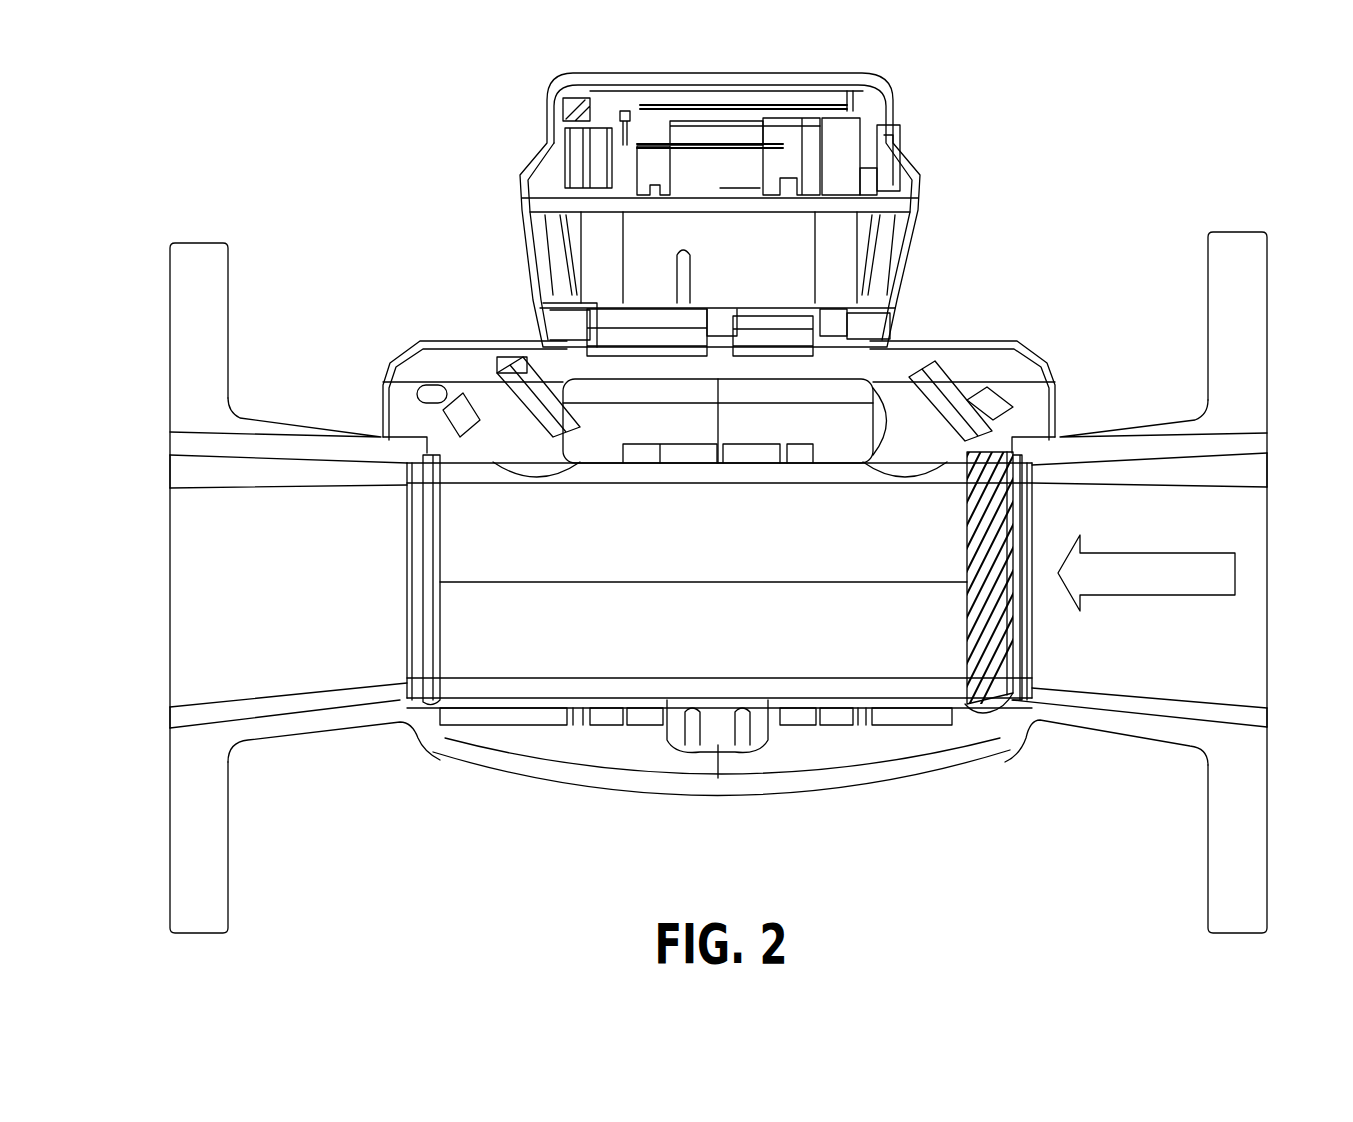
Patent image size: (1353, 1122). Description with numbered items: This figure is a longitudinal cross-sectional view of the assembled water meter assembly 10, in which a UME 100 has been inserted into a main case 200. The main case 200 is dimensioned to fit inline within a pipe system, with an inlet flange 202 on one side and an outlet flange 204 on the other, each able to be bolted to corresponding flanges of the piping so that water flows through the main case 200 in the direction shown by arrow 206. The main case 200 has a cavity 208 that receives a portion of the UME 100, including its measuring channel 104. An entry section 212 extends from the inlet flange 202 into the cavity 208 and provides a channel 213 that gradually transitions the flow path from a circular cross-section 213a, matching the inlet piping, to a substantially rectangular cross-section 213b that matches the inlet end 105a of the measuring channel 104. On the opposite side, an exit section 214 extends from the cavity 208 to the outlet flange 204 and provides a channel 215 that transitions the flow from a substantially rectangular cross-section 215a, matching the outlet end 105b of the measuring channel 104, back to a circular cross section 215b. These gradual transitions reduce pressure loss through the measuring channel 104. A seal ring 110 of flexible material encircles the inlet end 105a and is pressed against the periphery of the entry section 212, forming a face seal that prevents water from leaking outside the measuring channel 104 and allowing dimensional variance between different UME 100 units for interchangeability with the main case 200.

The assembly 10 is at (232, 106).
The UME 100 is at (438, 207).
The main case 200 is at (347, 810).
The outlet flange 204 is at (197, 243).
The inlet flange 202 is at (1228, 232).
The exit section 214 is at (146, 524).
The entry section 212 is at (1292, 519).
The channel 215 is at (250, 622).
The substantially rectangular cross-section 215a is at (407, 595).
The circular cross section 215b is at (172, 615).
The channel 213 is at (1149, 641).
The circular cross-section 213a is at (1263, 628).
The substantially rectangular cross-section 213b is at (1040, 607).
The measuring channel 104 is at (692, 569).
The inlet end 105a is at (990, 713).
The outlet end 105b is at (440, 640).
The seal ring 110 is at (1008, 692).
The arrow 206 is at (1146, 573).
The cavity 208 is at (555, 745).